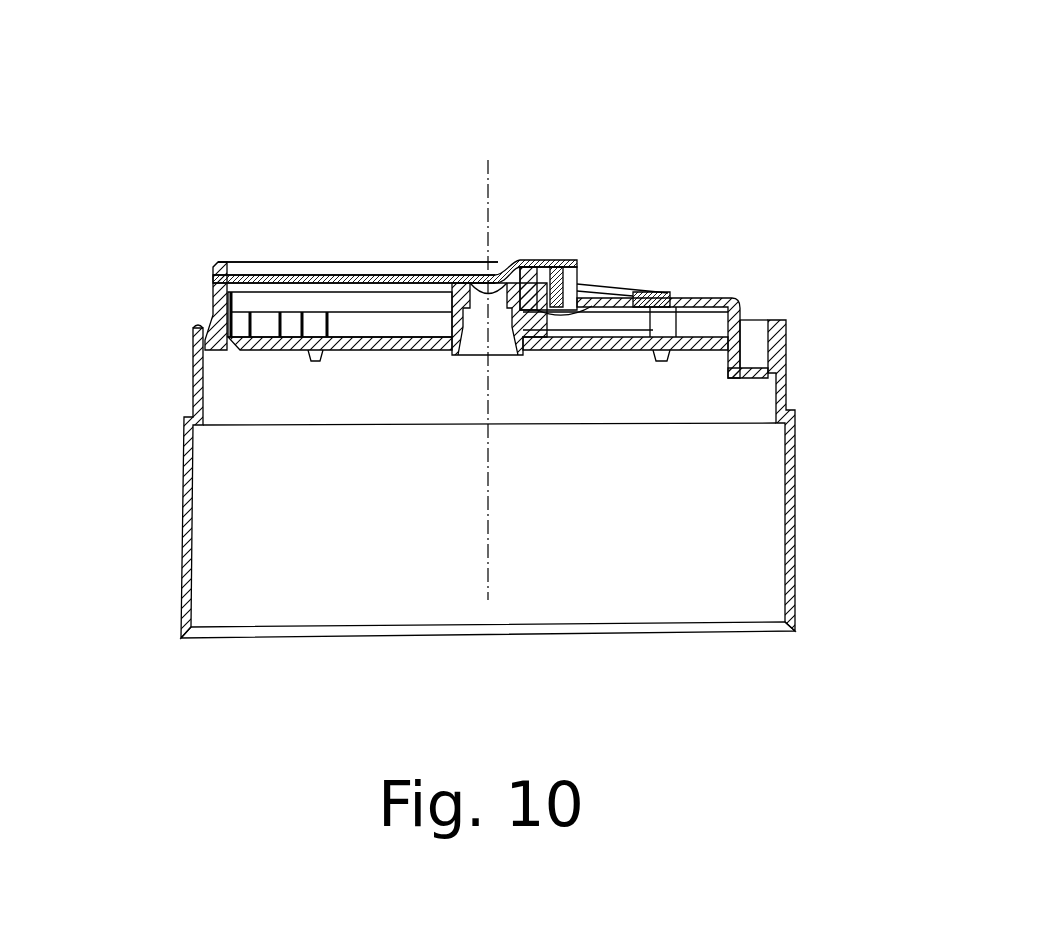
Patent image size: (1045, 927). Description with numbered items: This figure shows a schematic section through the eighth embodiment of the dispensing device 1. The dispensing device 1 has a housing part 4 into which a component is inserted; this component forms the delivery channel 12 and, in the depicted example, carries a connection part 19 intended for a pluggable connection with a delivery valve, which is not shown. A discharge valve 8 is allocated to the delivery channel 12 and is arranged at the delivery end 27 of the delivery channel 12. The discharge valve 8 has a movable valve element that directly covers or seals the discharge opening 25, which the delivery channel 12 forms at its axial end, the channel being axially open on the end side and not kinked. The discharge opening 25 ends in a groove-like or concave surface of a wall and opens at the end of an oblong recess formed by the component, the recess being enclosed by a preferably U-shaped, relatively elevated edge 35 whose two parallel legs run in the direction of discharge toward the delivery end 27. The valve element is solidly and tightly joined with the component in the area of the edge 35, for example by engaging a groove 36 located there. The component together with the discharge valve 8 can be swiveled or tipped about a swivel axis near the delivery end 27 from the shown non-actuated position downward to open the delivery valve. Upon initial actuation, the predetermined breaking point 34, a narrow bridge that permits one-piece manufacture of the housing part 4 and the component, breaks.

The dispensing device 1 is at (226, 198).
The housing part 4 is at (795, 518).
The discharge valve 8 is at (449, 255).
The delivery channel 12 is at (527, 285).
The connection part 19 is at (535, 356).
The discharge opening 25 is at (502, 290).
The delivery end 27 is at (213, 280).
The predetermined breaking point 34 is at (768, 370).
The edge 35 is at (580, 272).
The groove 36 is at (578, 288).